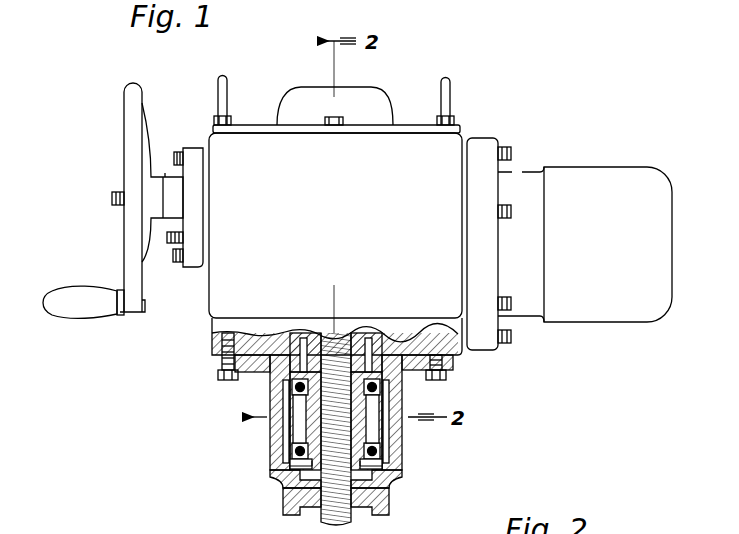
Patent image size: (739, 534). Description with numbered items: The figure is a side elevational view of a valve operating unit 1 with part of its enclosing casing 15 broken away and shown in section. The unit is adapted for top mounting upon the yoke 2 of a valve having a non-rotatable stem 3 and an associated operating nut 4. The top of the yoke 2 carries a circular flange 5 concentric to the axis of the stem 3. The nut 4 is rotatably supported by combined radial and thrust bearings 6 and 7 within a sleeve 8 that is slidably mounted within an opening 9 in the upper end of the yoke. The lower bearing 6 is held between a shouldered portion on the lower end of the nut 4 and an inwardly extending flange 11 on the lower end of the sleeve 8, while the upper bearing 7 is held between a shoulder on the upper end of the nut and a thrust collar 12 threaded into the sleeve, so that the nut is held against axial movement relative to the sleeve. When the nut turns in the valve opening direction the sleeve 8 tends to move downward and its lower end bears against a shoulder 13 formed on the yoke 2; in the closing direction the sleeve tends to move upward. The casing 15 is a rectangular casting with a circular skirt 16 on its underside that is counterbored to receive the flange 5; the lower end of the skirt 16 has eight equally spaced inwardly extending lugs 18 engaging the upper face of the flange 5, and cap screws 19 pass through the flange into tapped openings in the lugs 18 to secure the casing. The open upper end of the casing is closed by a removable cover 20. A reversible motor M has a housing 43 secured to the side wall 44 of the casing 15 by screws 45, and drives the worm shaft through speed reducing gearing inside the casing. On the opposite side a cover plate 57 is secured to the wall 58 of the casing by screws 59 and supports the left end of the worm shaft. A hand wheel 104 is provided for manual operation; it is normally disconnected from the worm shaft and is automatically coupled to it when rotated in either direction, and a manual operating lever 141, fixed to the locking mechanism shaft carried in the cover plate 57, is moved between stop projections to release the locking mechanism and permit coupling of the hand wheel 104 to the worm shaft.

The valve operating unit 1 is at (344, 212).
The yoke 2 is at (285, 507).
The stem 3 is at (352, 512).
The operating nut 4 is at (299, 428).
The circular flange 5 is at (457, 365).
The combined radial and thrust bearing 6 is at (374, 450).
The combined radial and thrust bearing 7 is at (388, 387).
The sleeve 8 is at (387, 434).
The opening 9 is at (287, 464).
The inwardly extending flange 11 is at (374, 468).
The thrust collar 12 is at (290, 365).
The shoulder 13 is at (286, 481).
The enclosing casing 15 is at (413, 121).
The circular skirt 16 is at (212, 327).
The lugs 18 is at (231, 333).
The cap screws 19 is at (225, 381).
The removable cover 20 is at (297, 96).
The housing 43 is at (575, 168).
The side wall 44 is at (469, 138).
The screws 45 is at (510, 150).
The cover plate 57 is at (190, 147).
The wall 58 is at (207, 135).
The screws 59 is at (176, 156).
The hand wheel 104 is at (130, 237).
The manual operating lever 141 is at (168, 263).